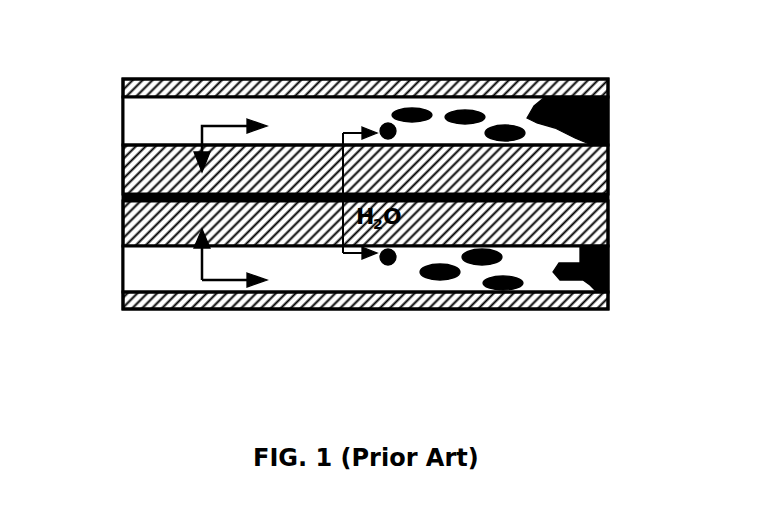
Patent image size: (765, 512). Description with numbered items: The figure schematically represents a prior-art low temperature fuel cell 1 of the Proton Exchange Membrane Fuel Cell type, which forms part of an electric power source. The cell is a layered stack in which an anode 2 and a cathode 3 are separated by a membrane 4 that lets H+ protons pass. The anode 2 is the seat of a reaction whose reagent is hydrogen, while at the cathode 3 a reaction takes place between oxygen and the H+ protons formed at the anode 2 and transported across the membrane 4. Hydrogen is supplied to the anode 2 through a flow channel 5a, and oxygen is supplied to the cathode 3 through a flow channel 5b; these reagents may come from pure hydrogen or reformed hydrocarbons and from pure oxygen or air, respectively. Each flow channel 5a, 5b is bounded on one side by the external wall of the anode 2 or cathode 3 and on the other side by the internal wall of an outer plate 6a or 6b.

The low temperature fuel cell 1 is at (622, 50).
The anode 2 is at (608, 163).
The cathode 3 is at (608, 227).
The membrane 4 is at (608, 196).
The flow channel 5a is at (128, 125).
The flow channel 5b is at (130, 280).
The plate 6a is at (275, 79).
The plate 6b is at (528, 309).